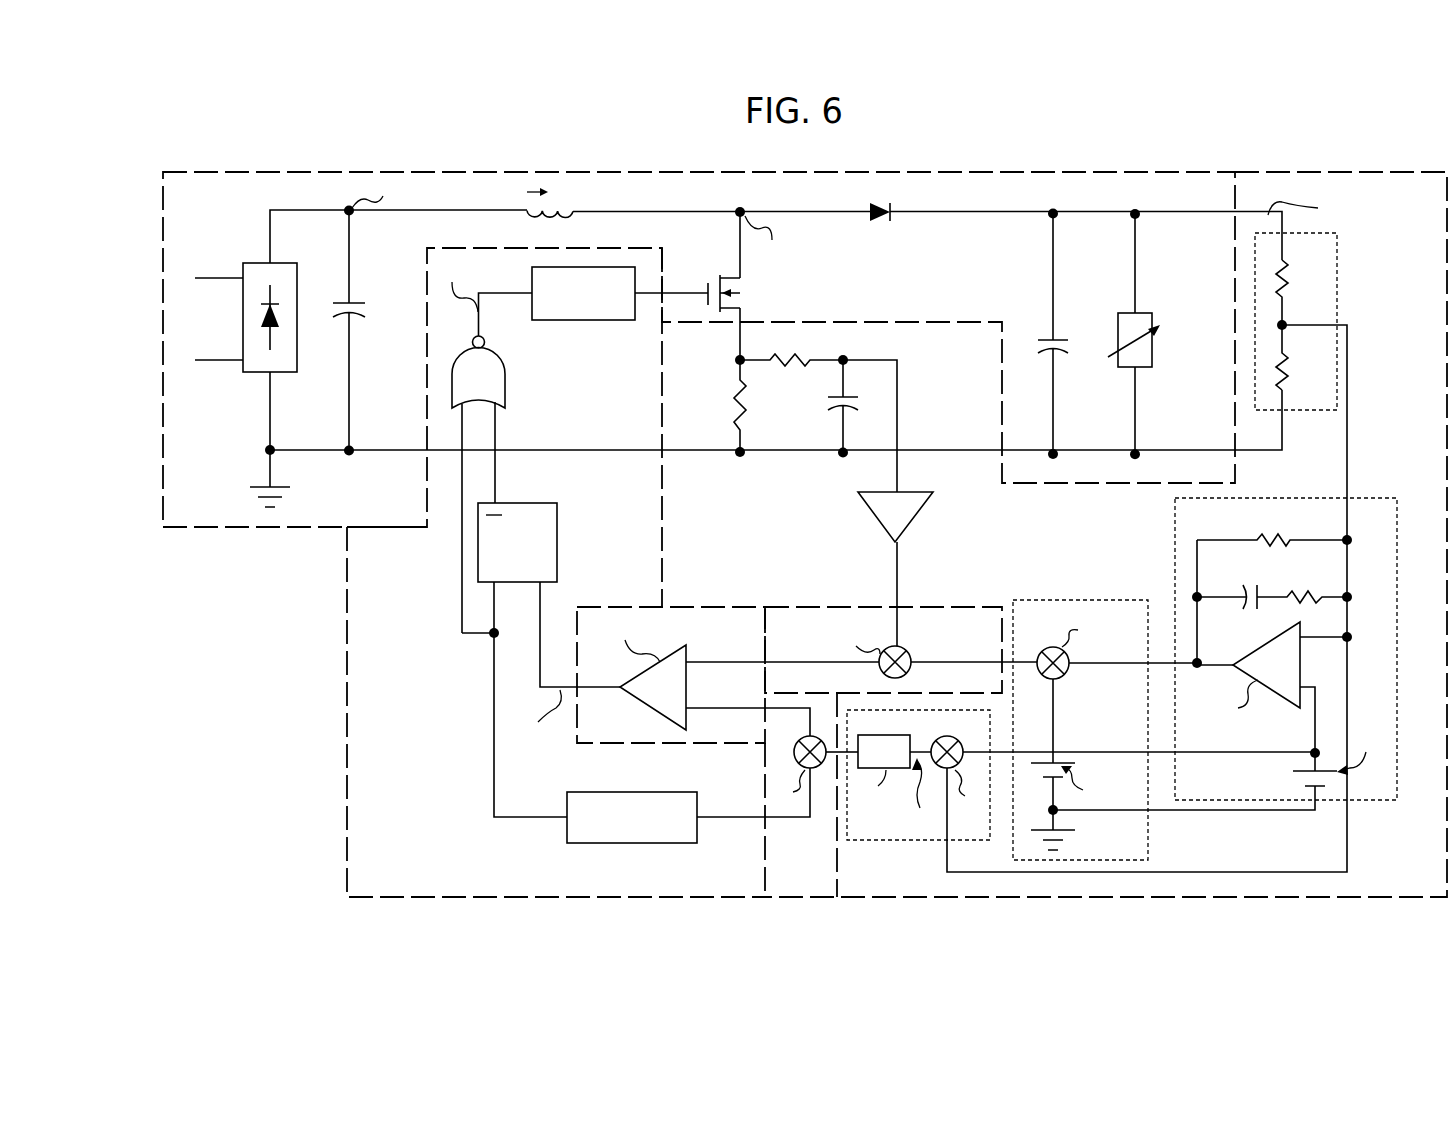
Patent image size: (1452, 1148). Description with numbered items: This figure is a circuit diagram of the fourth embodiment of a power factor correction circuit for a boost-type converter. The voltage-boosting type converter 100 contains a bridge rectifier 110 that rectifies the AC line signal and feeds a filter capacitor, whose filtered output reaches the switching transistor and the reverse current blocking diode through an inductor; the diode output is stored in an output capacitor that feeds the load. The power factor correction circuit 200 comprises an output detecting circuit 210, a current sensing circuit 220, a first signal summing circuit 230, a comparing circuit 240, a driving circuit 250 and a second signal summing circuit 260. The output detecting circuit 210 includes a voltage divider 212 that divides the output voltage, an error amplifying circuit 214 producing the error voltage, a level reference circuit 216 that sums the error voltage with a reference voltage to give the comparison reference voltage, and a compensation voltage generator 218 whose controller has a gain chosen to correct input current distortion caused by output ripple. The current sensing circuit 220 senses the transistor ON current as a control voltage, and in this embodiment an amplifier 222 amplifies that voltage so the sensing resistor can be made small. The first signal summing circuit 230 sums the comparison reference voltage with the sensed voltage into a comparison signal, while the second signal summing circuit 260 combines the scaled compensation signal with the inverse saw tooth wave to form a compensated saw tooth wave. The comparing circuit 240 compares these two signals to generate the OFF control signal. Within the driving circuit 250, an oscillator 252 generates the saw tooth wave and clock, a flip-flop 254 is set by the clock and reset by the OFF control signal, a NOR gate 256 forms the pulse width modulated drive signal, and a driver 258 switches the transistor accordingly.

The voltage-boosting type converter 100 is at (1102, 172).
The bridge rectifier 110 is at (257, 263).
The power factor correction circuit 200 is at (345, 745).
The output detecting circuit 210 is at (1415, 889).
The voltage divider 212 is at (1337, 277).
The error amplifying circuit 214 is at (1380, 498).
The level reference circuit 216 is at (1148, 830).
The compensation voltage generator 218 is at (898, 842).
The current sensing circuit 220 is at (755, 600).
The amplifier 222 is at (872, 508).
The first signal summing circuit 230 is at (960, 692).
The comparing circuit 240 is at (630, 741).
The driving circuit 250 is at (397, 879).
The oscillator 252 is at (625, 845).
The flip-flop 254 is at (557, 530).
The NOR gate 256 is at (507, 390).
The driver 258 is at (585, 322).
The second signal summing circuit 260 is at (803, 892).